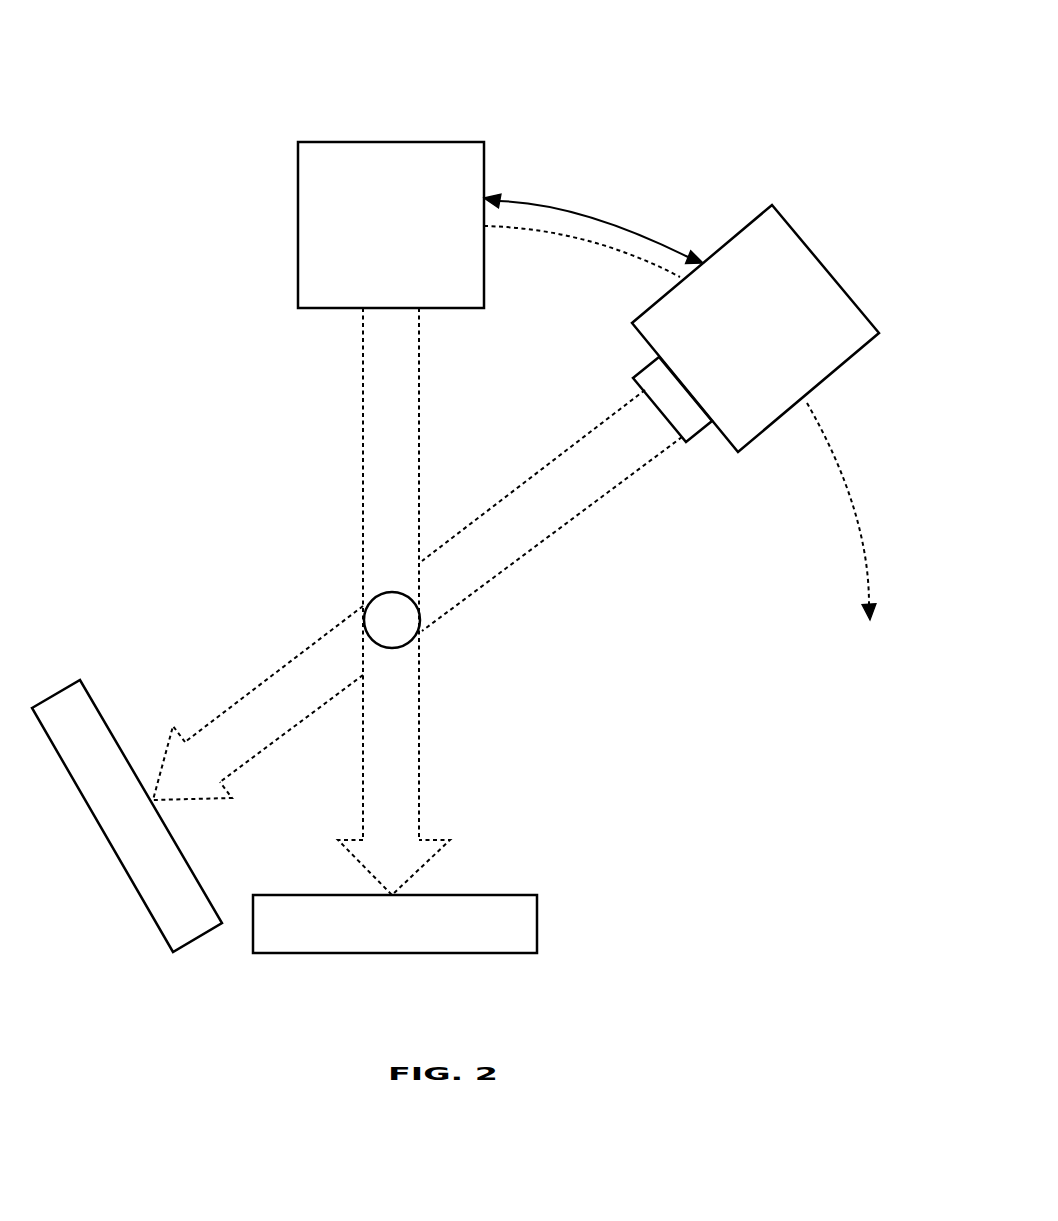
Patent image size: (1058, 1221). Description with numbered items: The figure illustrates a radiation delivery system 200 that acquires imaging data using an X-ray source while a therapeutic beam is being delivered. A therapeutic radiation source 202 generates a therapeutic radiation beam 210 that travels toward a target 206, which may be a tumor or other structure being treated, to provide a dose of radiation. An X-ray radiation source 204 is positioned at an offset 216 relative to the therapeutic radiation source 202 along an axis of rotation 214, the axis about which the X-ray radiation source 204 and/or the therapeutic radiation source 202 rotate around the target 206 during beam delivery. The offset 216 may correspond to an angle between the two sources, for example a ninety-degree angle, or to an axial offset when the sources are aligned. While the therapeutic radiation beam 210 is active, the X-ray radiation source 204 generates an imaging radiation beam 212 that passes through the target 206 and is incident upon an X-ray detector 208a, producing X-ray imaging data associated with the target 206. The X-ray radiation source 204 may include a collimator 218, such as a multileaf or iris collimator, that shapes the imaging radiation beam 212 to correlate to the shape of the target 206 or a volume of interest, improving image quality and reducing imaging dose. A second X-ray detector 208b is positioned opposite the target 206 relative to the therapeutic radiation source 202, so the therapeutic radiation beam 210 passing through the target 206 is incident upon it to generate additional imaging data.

The radiation delivery system 200 is at (96, 55).
The therapeutic radiation source 202 is at (391, 225).
The X-ray radiation source 204 is at (818, 239).
The target 206 is at (352, 593).
The X-ray detector 208a is at (105, 687).
The X-ray detector 208b is at (553, 886).
The therapeutic radiation beam 210 is at (348, 432).
The imaging radiation beam 212 is at (503, 585).
The axis of rotation 214 is at (849, 589).
The offset 216 is at (593, 216).
The collimator 218 is at (699, 461).